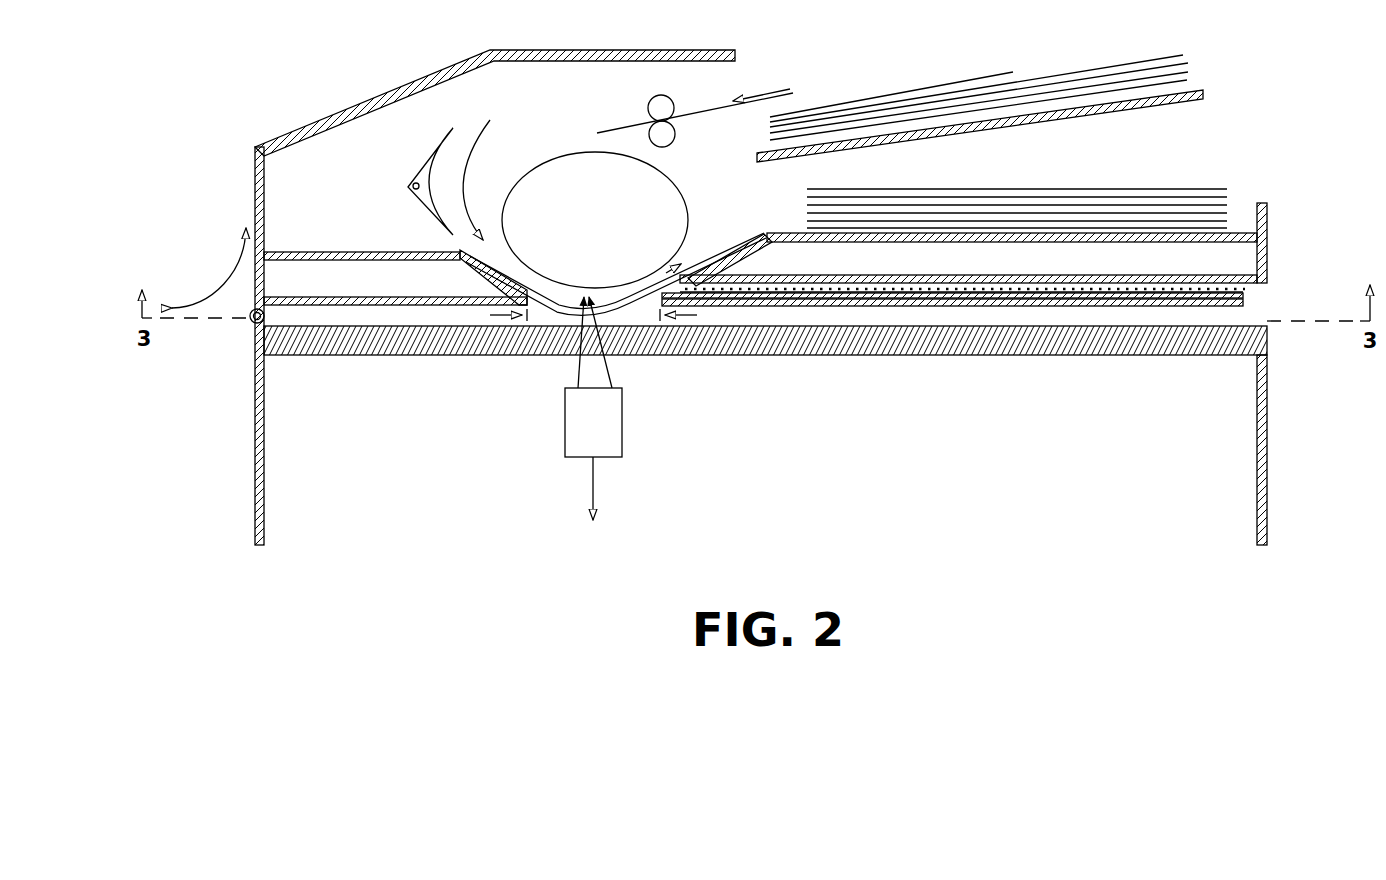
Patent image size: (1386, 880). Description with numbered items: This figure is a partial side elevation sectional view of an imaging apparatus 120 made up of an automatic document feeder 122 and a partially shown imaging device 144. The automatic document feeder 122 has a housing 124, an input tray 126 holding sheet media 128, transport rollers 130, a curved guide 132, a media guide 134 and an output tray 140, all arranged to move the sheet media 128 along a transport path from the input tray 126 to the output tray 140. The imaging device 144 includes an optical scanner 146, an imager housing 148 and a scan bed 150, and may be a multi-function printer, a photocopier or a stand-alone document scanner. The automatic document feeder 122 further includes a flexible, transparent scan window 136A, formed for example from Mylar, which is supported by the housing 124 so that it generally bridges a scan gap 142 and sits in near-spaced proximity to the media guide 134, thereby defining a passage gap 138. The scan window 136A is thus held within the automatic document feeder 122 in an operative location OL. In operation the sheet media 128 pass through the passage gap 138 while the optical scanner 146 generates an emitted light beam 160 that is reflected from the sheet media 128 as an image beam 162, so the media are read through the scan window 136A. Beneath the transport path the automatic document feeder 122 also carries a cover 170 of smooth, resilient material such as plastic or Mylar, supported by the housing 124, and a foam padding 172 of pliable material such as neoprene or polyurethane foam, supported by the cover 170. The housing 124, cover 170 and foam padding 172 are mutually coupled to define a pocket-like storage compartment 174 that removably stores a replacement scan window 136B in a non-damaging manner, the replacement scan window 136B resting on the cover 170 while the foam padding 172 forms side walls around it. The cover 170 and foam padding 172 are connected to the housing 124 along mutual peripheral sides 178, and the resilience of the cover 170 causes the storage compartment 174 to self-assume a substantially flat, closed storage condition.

The imaging apparatus 120 is at (188, 134).
The automatic document feeder 122 is at (1284, 138).
The housing 124 is at (406, 86).
The input tray 126 is at (1204, 90).
The sheet media 128 is at (937, 84).
The transport rollers 130 is at (676, 123).
The curved guide 132 is at (411, 184).
The media guide 134 is at (567, 156).
The scan window 136A is at (713, 257).
The replacement scan window 136B is at (993, 300).
The passage gap 138 is at (557, 314).
The output tray 140 is at (1247, 232).
The scan gap 142 is at (535, 312).
The imaging device 144 is at (1297, 442).
The optical scanner 146 is at (620, 438).
The imager housing 148 is at (255, 402).
The scan bed 150 is at (905, 353).
The emitted light beam 160 is at (578, 372).
The image beam 162 is at (608, 372).
The cover 170 is at (1093, 307).
The foam padding 172 is at (1166, 275).
The storage compartment 174 is at (1245, 290).
The peripheral sides 178 is at (250, 315).
The operative location OL is at (641, 316).